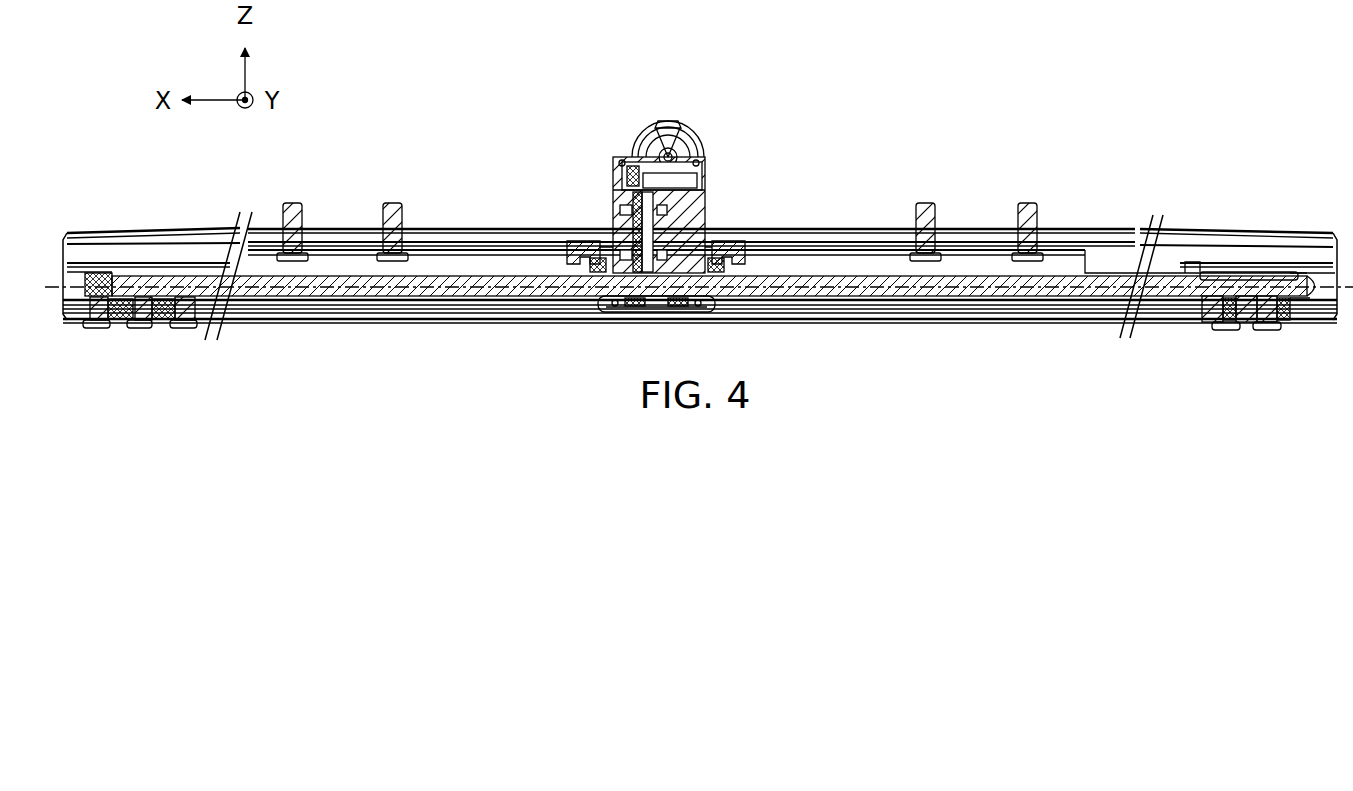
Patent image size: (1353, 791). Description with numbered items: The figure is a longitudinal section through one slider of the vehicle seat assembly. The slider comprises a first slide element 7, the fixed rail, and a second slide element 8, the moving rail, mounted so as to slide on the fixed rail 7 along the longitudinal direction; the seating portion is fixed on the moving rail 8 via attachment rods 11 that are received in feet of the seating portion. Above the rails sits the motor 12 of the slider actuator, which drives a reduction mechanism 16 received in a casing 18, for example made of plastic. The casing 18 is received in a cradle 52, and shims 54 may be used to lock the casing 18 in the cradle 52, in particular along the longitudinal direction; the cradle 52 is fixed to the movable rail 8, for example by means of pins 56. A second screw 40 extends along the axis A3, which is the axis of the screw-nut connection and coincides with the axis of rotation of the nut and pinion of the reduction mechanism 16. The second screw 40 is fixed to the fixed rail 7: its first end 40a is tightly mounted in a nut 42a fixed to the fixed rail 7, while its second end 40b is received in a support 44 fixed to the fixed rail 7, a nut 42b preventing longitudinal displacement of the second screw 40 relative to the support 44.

The first slide element 7 is at (915, 325).
The second slide element 8 is at (466, 240).
The attachment rods 11 is at (393, 232).
The motor 12 is at (671, 135).
The reduction mechanism 16 is at (632, 164).
The casing 18 is at (698, 208).
The second screw 40 is at (285, 288).
The first end 40a is at (158, 318).
The second end 40b is at (1276, 312).
The nut 42a is at (93, 272).
The nut 42b is at (1296, 274).
The support 44 is at (1237, 274).
The cradle 52 is at (612, 306).
The shims 54 is at (596, 266).
The pins 56 is at (583, 244).
The axis A3 is at (398, 288).